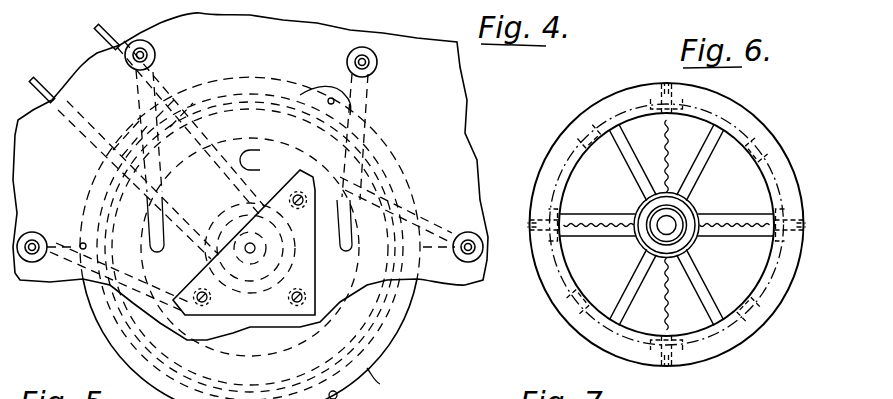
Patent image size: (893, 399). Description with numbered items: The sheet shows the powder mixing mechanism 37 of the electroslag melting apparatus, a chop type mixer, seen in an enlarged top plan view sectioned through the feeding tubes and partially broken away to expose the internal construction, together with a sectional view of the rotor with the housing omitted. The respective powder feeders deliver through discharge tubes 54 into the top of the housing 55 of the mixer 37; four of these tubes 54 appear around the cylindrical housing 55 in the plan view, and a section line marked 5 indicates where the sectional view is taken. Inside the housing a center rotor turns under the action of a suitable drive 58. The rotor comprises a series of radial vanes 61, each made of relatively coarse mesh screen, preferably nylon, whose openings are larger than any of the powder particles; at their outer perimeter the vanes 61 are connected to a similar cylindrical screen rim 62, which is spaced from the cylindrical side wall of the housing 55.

In FIG. 4, the powder mixing mechanism 37 is at (385, 352).
In FIG. 6, the powder mixing mechanism 37 is at (803, 100).
In FIG. 4, the discharge tubes 54 is at (152, 55).
In FIG. 4, the drive 58 is at (97, 46).
In FIG. 4, the section line 5 is at (17, 248).
In FIG. 4, the housing 55 is at (386, 383).
In FIG. 6, the radial vanes 61 is at (727, 223).
In FIG. 6, the screen rim 62 is at (616, 110).